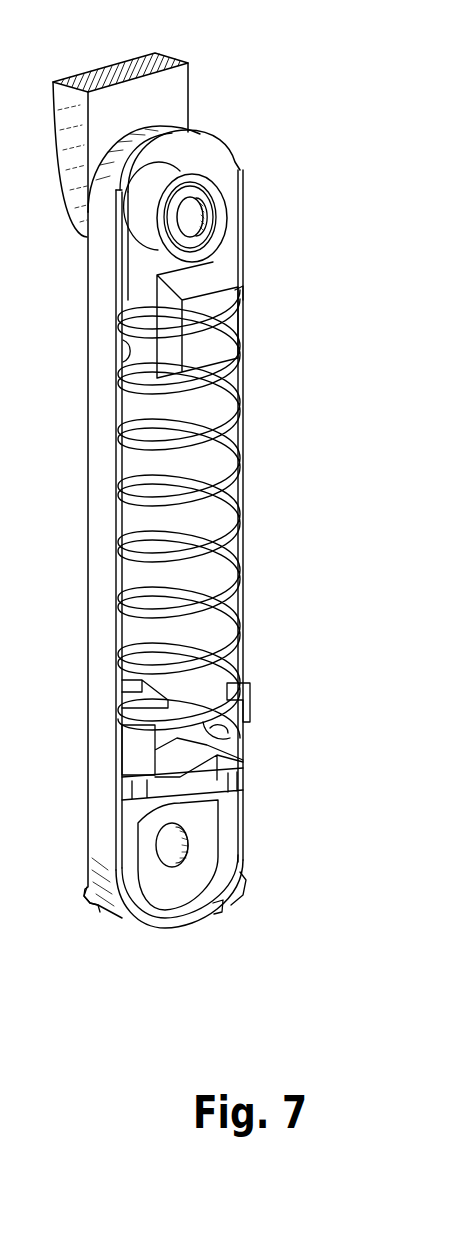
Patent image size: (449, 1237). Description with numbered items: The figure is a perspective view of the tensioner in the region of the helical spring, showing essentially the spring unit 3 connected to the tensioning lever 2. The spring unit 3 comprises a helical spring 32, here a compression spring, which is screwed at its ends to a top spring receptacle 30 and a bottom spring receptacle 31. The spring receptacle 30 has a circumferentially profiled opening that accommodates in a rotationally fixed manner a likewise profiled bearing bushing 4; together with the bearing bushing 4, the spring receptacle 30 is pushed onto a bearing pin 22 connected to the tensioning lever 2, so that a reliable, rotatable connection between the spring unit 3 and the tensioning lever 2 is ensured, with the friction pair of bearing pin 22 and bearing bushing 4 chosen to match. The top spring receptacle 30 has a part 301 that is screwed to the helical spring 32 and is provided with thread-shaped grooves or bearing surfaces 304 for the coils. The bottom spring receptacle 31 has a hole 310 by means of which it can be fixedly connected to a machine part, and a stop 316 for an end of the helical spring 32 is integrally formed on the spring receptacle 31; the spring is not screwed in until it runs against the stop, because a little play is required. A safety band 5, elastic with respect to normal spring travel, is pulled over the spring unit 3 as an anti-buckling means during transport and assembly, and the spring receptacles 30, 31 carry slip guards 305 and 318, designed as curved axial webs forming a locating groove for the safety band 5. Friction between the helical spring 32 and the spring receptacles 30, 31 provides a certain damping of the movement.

The tensioning lever 2 is at (180, 83).
The spring unit 3 is at (252, 462).
The bearing bushing 4 is at (165, 236).
The safety band 5 is at (95, 470).
The bearing pin 22 is at (207, 215).
The spring receptacle 30 is at (197, 145).
The spring receptacle 31 is at (172, 893).
The helical spring 32 is at (223, 607).
The part 301 is at (225, 340).
The thread-shaped grooves or bearing surfaces 304 is at (240, 298).
The slip guard 305 is at (128, 178).
The hole 310 is at (188, 847).
The stop 316 is at (243, 742).
The slip guard 318 is at (232, 893).